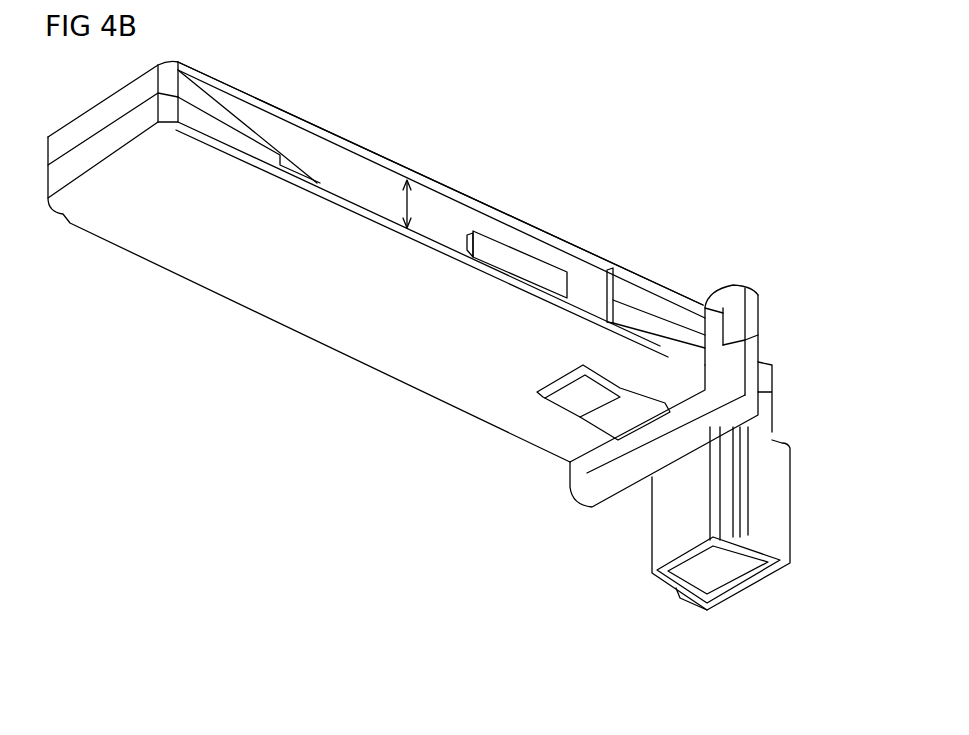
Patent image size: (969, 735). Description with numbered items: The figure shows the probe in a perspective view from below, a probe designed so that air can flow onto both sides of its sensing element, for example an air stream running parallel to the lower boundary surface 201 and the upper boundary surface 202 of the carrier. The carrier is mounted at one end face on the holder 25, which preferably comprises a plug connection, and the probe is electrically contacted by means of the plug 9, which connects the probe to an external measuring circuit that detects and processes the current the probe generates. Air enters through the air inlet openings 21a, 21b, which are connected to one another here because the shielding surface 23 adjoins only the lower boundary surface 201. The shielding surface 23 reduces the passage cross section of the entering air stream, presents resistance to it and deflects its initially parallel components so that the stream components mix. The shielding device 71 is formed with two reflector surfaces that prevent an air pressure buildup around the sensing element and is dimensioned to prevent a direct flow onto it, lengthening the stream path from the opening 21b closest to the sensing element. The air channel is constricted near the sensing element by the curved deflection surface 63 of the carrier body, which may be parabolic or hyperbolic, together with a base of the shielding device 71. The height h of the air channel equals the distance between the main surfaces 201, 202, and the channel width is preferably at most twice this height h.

The lower boundary surface 201 is at (313, 332).
The upper boundary surface 202 is at (378, 152).
The deflection surface 63 is at (223, 113).
The height of the air channel h is at (410, 192).
The air inlet opening 21a is at (449, 230).
The shielding surface 23 is at (527, 255).
The air inlet opening 21b is at (587, 290).
The shielding device 71 is at (632, 300).
The holder 25 is at (715, 318).
The plug 9 is at (660, 530).